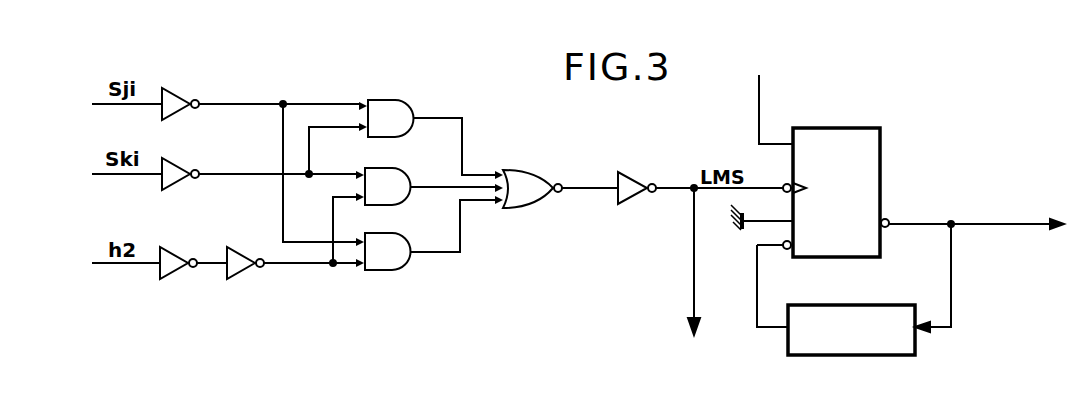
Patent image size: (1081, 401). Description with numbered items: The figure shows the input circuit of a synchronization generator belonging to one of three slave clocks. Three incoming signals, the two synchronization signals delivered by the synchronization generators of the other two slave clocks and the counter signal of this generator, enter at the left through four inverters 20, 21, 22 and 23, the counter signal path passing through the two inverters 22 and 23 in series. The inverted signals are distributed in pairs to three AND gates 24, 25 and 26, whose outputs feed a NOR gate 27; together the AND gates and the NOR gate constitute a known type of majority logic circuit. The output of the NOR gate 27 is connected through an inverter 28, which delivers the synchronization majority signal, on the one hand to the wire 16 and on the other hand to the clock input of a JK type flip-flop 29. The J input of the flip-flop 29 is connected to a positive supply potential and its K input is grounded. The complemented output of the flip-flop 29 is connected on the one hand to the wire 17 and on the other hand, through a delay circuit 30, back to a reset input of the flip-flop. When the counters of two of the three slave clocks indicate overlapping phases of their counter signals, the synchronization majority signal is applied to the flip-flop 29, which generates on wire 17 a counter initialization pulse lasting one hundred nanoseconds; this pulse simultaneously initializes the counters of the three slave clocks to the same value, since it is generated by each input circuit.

The wire 16 is at (690, 274).
The wire 17 is at (1003, 226).
The inverter 20 is at (177, 96).
The inverter 21 is at (177, 167).
The inverter 22 is at (174, 256).
The inverter 23 is at (240, 256).
The AND gate 24 is at (396, 110).
The AND gate 25 is at (398, 185).
The AND gate 26 is at (398, 252).
The NOR gate 27 is at (527, 180).
The inverter 28 is at (636, 182).
The flip-flop 29 is at (872, 172).
The delay circuit 30 is at (884, 318).